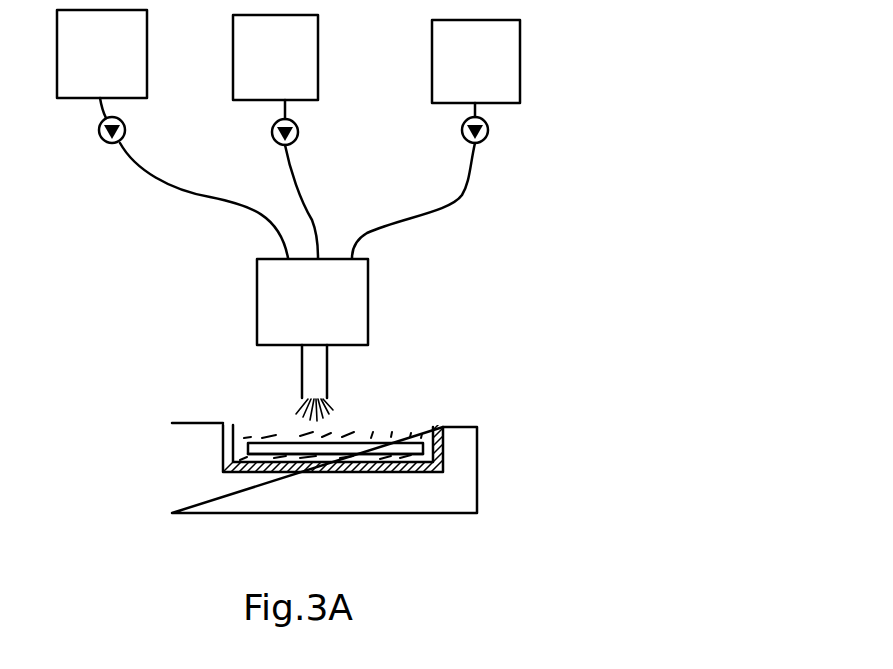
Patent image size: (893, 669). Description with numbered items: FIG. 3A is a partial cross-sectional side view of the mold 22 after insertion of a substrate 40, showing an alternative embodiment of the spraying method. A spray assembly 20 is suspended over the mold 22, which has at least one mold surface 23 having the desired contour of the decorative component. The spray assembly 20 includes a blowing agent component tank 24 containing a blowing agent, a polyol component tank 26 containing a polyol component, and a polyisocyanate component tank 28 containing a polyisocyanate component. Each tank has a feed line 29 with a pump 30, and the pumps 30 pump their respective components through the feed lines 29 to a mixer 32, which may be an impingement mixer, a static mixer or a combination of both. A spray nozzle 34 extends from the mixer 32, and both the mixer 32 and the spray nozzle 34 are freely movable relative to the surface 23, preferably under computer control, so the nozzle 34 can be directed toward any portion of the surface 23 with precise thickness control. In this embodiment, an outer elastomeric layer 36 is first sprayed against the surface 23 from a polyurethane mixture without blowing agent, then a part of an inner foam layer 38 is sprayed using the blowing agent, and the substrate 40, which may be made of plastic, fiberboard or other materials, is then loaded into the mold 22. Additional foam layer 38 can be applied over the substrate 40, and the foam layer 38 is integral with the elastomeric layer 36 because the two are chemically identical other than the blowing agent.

The spray assembly 20 is at (552, 139).
The mold 22 is at (477, 467).
The mold surface 23 is at (242, 472).
The blowing agent component tank 24 is at (122, 63).
The polyol component tank 26 is at (291, 63).
The polyisocyanate component tank 28 is at (495, 68).
The feed line 29 is at (200, 192).
The pump 30 is at (124, 124).
The mixer 32 is at (372, 345).
The spray nozzle 34 is at (302, 378).
The outer elastomeric layer 36 is at (240, 427).
The inner foam layer 38 is at (363, 430).
The substrate 40 is at (413, 452).